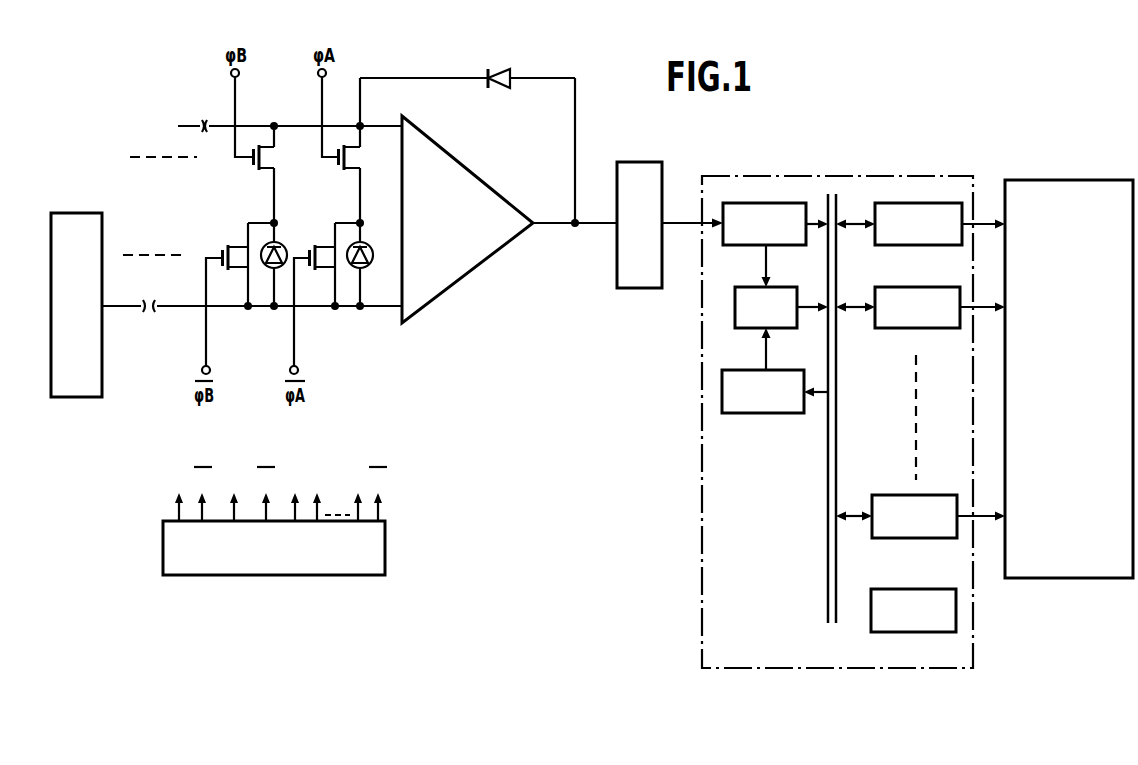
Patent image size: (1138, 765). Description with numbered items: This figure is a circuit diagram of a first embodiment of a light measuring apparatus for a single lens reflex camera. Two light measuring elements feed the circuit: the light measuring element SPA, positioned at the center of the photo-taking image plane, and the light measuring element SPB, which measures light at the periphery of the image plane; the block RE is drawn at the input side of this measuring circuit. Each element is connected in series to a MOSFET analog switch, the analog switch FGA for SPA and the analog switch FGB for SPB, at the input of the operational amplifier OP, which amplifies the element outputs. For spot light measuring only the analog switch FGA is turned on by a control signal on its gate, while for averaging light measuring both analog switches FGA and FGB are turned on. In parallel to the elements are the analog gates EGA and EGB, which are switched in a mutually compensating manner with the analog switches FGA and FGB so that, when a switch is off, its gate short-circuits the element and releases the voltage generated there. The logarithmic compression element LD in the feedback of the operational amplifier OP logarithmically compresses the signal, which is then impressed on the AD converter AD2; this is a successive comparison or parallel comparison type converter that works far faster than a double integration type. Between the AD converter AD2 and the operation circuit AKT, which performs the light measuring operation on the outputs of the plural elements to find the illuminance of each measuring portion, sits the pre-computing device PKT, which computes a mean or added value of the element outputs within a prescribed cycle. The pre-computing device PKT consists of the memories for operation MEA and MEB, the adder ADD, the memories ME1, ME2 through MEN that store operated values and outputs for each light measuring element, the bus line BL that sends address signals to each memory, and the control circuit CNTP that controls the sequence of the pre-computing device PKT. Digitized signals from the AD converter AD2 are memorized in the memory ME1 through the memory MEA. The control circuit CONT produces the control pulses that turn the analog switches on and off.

The receiver / photo-sensor element RE is at (76, 305).
The analog switch FGB is at (261, 156).
The analog switch FGA is at (346, 156).
The analog gate EGB is at (222, 244).
The analog gate EGA is at (309, 244).
The light measuring element SPB is at (278, 243).
The light measuring element SPA is at (369, 263).
The operational amplifier OP is at (467, 219).
The logarithmic compression element LD is at (494, 66).
The AD converter AD2 is at (639, 225).
The pre-computing device PKT is at (826, 176).
The memory for operation MEA is at (764, 224).
The adder ADD is at (766, 307).
The memory for operation MEB is at (763, 391).
The memory ME1 is at (918, 224).
The memory ME2 is at (917, 307).
The memory MEN is at (914, 516).
The control circuit CNTP is at (913, 610).
The bus line BL is at (826, 556).
The operation circuit AKT is at (1069, 379).
The control circuit CONT is at (385, 548).